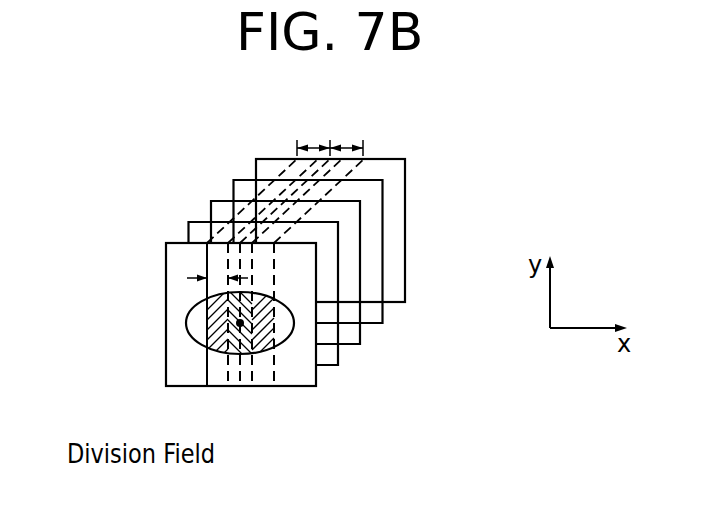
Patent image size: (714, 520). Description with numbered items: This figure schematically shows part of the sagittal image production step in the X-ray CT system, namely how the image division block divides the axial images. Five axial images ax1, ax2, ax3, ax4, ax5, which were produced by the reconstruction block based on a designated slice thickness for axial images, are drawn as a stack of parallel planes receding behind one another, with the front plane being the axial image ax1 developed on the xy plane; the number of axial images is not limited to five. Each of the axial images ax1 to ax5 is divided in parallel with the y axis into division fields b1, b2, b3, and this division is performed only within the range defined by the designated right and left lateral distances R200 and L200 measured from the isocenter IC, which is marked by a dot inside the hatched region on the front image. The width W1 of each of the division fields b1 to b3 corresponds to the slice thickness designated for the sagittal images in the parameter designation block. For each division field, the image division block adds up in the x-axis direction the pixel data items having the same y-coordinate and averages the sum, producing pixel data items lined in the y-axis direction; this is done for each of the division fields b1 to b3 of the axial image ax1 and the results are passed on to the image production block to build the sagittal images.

The axial image ax1 is at (313, 386).
The axial image ax2 is at (335, 357).
The axial image ax3 is at (358, 337).
The axial image ax4 is at (378, 311).
The axial image ax5 is at (399, 260).
The division field b1 is at (216, 386).
The division field b2 is at (235, 387).
The division field b3 is at (257, 387).
The isocenter IC is at (238, 322).
The width of division field W1 is at (217, 276).
The left lateral distance L200 is at (313, 142).
The right lateral distance R200 is at (347, 142).